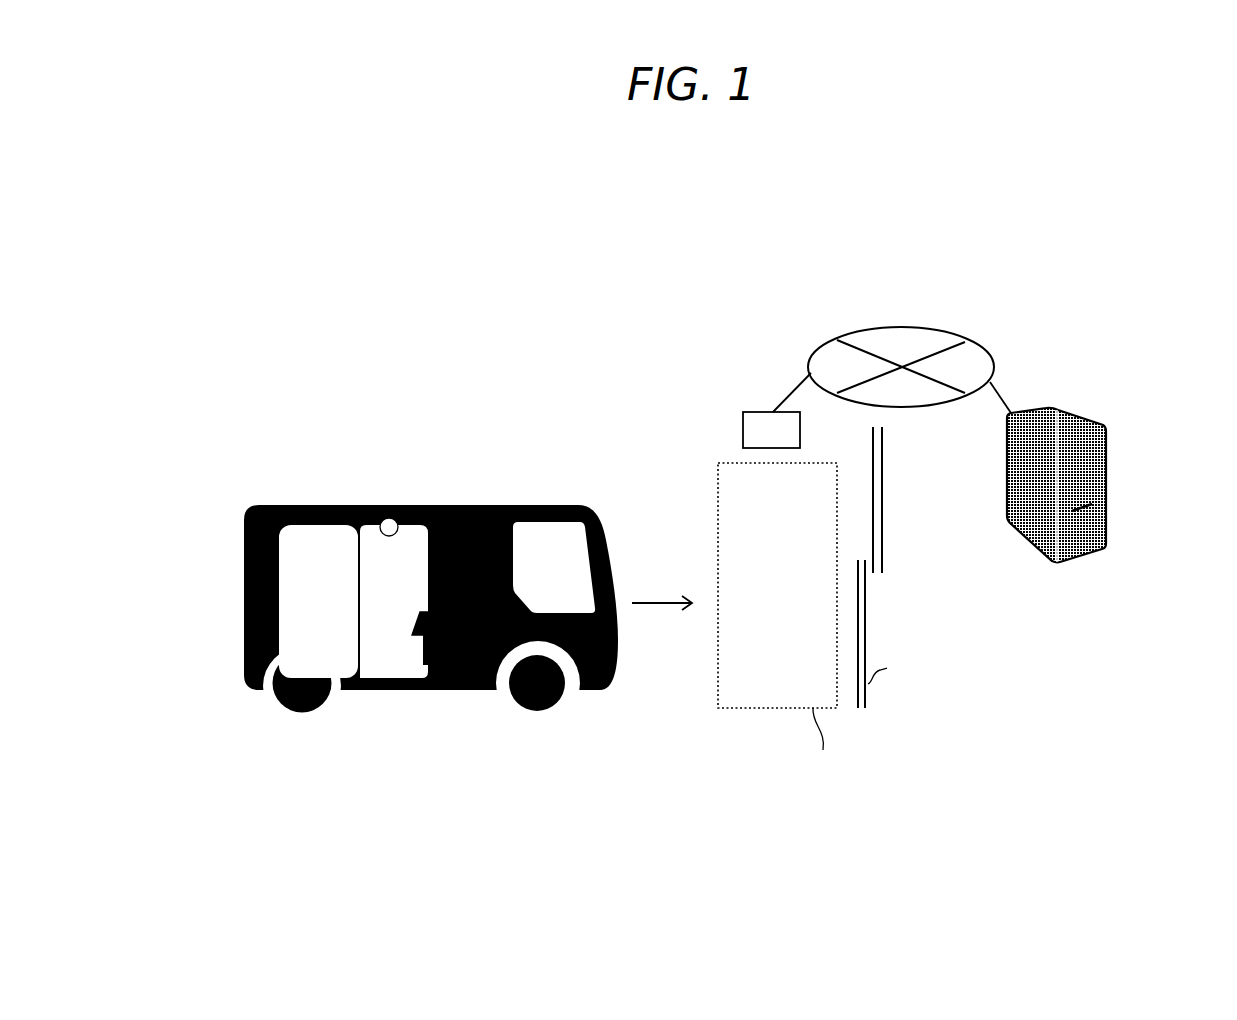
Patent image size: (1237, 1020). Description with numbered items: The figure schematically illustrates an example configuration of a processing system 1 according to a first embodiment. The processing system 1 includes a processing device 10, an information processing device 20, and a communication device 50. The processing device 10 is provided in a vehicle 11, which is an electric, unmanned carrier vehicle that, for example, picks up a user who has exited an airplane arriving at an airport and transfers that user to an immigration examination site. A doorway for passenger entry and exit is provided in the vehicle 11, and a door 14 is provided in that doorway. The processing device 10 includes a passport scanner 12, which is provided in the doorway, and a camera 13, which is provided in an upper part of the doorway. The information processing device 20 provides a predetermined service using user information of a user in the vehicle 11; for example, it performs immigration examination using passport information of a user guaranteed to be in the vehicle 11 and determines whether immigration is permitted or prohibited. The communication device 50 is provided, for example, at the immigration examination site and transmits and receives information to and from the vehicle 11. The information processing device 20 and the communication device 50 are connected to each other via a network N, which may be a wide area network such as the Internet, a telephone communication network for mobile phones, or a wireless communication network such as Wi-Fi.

The processing system 1 is at (1100, 228).
The processing device 10 is at (391, 402).
The vehicle 11 is at (511, 503).
The passport scanner 12 is at (428, 610).
The camera 13 is at (389, 530).
The door 14 is at (302, 536).
The information processing device 20 is at (1080, 418).
The communication device 50 is at (743, 436).
The network N is at (893, 328).